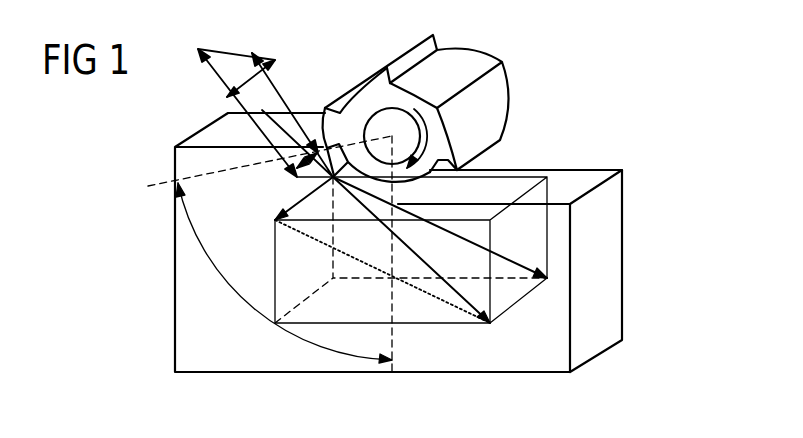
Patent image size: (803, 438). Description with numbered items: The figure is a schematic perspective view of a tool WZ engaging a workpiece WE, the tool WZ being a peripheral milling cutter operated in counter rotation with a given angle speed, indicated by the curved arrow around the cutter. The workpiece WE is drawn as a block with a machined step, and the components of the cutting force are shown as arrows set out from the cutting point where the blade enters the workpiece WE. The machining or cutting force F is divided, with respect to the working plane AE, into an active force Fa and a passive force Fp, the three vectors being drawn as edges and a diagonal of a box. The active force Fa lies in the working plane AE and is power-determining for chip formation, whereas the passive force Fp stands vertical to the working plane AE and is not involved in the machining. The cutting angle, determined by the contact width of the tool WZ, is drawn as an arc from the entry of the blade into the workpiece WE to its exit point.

The tool WZ is at (480, 60).
The working plane AE is at (587, 180).
The workpiece WE is at (612, 232).
The passive force Fp is at (286, 212).
The active force Fa is at (451, 251).
The cutting force F is at (411, 266).